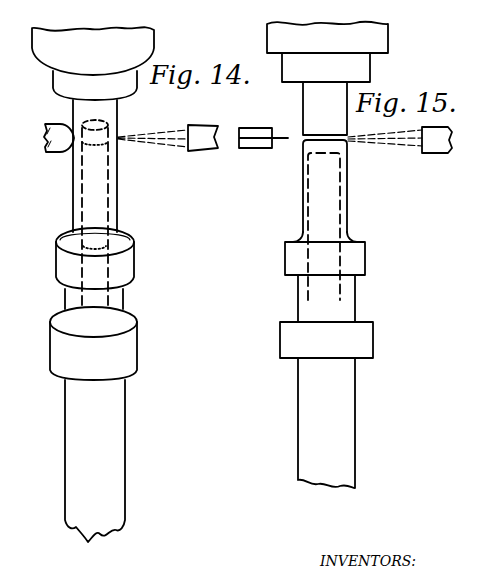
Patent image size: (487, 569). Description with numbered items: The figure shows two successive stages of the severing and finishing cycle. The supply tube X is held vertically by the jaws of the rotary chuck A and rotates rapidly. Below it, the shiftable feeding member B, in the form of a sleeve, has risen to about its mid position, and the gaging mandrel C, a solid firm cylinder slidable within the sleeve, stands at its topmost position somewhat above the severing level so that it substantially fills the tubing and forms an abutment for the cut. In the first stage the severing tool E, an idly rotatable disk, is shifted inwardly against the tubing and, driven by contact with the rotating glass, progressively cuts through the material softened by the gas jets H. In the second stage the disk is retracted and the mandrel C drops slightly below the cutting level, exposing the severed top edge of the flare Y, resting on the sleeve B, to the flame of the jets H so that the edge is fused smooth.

In FIG. 15, the rotary chuck A is at (371, 67).
In FIG. 14, the feeding member B is at (123, 291).
In FIG. 15, the feeding member B is at (356, 291).
In FIG. 14, the gaging mandrel C is at (110, 190).
In FIG. 15, the gaging mandrel C is at (342, 206).
In FIG. 14, the severing tool E is at (44, 127).
In FIG. 14, the gas jets H is at (168, 148).
In FIG. 15, the supply tube X is at (336, 119).
In FIG. 14, the flare Y is at (73, 200).
In FIG. 15, the flare Y is at (303, 203).